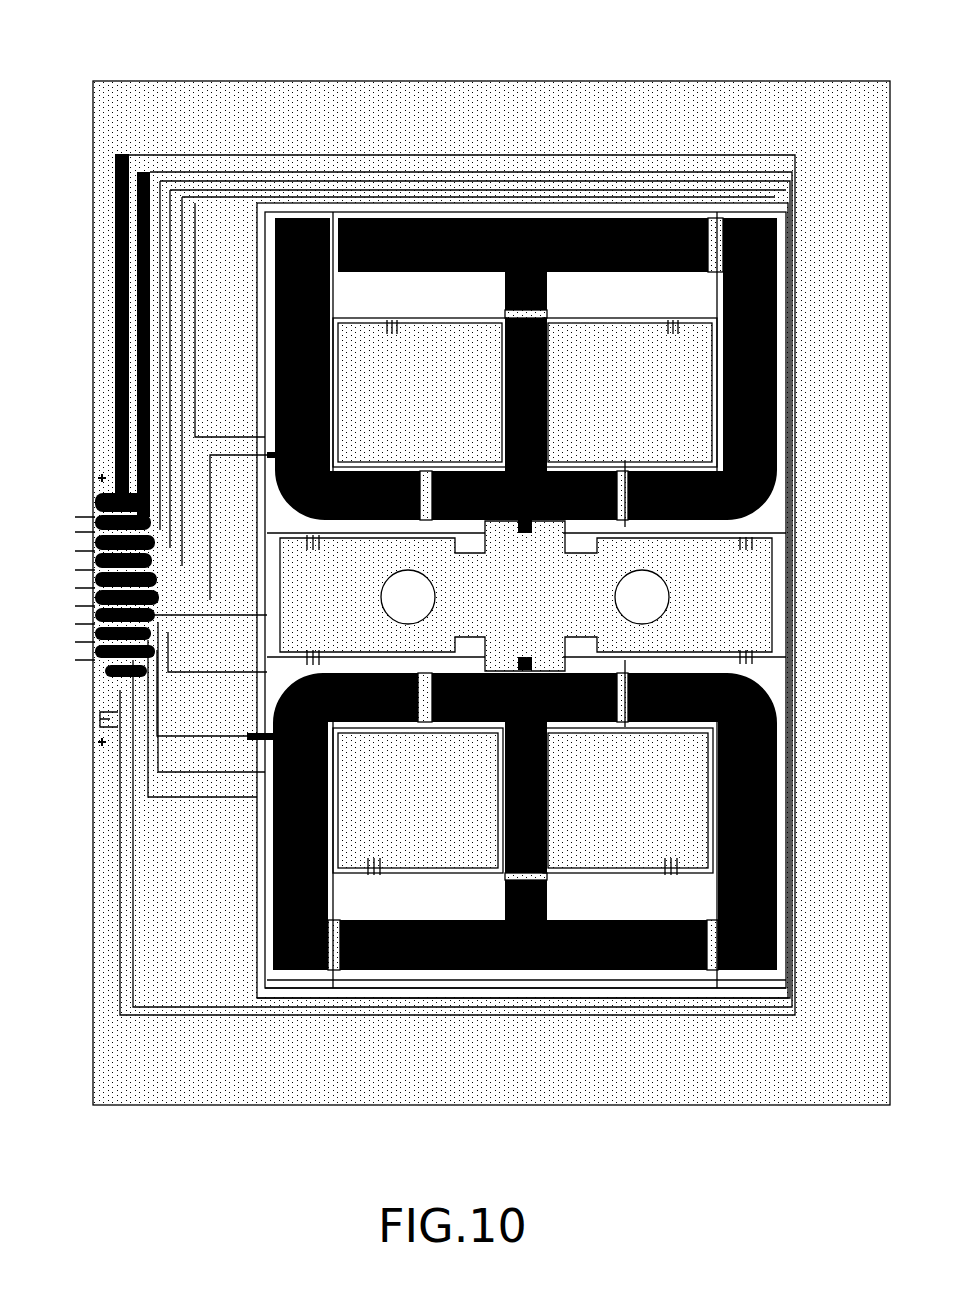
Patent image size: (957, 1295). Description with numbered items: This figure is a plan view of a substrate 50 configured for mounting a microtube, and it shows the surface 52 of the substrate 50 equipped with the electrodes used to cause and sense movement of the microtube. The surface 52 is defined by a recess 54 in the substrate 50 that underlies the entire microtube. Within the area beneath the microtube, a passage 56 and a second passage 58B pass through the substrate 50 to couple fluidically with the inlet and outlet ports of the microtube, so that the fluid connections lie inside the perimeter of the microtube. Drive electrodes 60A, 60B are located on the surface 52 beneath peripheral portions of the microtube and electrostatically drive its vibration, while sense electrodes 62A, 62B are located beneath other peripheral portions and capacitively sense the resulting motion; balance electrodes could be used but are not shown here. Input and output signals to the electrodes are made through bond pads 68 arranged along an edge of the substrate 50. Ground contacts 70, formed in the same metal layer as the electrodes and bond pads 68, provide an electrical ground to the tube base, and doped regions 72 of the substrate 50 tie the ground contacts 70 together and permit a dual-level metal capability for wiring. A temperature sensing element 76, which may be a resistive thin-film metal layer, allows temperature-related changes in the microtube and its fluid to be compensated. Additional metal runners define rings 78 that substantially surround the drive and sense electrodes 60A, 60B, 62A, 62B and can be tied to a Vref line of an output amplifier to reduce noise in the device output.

The substrate 50 is at (300, 55).
The surface 52 is at (443, 88).
The recess 54 is at (420, 312).
The passage 56 is at (668, 597).
The second passage 58B is at (395, 580).
The drive electrode 60A is at (433, 272).
The drive electrode 60B is at (650, 920).
The sense electrode 62A is at (330, 306).
The sense electrode 62B is at (327, 828).
The bond pads 68 is at (50, 492).
The ground contacts 70 is at (509, 522).
The doped regions 72 is at (437, 402).
The temperature sensing element 76 is at (558, 125).
The rings 78 is at (615, 318).